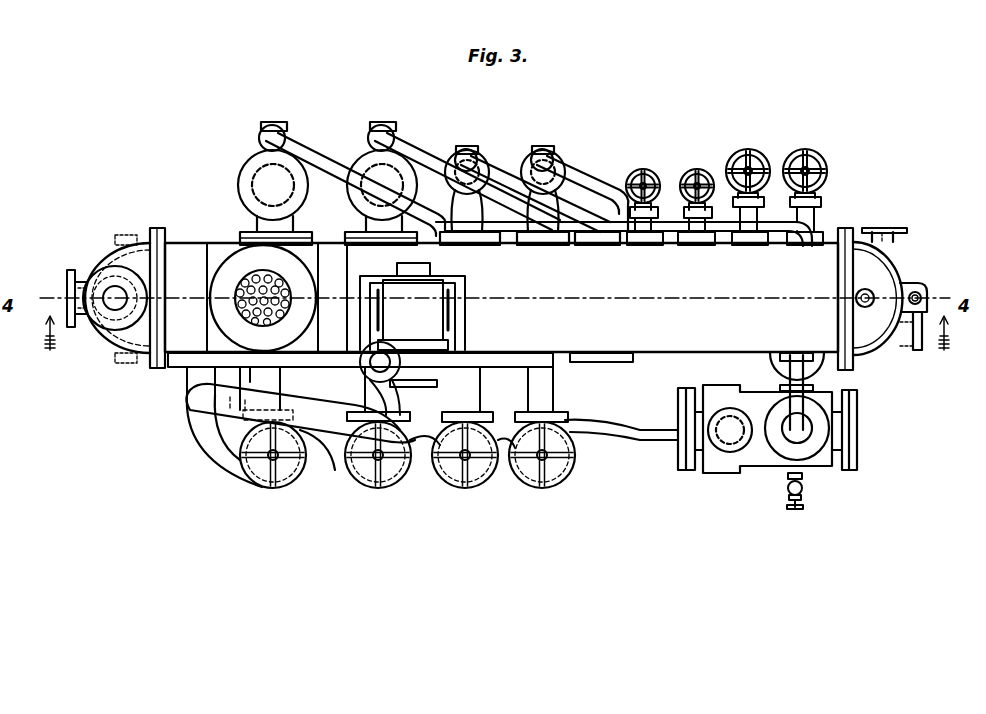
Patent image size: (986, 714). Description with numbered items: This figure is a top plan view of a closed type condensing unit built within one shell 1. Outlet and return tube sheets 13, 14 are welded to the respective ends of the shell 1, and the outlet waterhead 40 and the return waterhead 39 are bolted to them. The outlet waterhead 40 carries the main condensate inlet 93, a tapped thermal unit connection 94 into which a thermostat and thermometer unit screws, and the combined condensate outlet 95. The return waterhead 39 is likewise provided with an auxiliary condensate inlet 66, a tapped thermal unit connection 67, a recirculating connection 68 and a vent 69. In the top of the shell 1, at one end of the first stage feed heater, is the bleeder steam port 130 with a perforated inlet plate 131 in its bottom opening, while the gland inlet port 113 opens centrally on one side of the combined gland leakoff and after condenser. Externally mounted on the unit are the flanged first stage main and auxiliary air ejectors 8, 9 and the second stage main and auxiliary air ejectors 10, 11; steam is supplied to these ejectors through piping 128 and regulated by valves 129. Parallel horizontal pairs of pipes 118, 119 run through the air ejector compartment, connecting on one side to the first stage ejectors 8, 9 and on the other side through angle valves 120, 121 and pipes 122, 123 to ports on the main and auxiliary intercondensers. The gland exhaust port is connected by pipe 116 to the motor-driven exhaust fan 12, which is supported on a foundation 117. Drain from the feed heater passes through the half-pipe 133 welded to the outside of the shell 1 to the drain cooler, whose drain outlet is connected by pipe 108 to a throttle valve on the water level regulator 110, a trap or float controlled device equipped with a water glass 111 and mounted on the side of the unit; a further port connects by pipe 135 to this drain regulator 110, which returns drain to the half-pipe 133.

The shell 1 is at (690, 340).
The outlet tube sheet 13 is at (158, 230).
The return tube sheet 14 is at (846, 228).
The outlet waterhead 40 is at (118, 262).
The combined condensate outlet 95 is at (115, 305).
The main condensate inlet 93 is at (80, 320).
The tapped thermal unit connection 94 is at (125, 236).
The bleeder steam port 130 is at (245, 272).
The perforated inlet plate 131 is at (290, 283).
The first stage main air ejector 8 is at (372, 172).
The first stage auxiliary air ejector 9 is at (556, 210).
The steam supply piping 128 is at (594, 218).
The steam regulating valves 129 is at (649, 170).
The second stage auxiliary air ejector 11 is at (690, 205).
The second stage main air ejector 10 is at (755, 160).
The return waterhead 39 is at (893, 270).
The recirculating connection 68 is at (888, 228).
The vent 69 is at (868, 292).
The tapped thermal unit connection 67 is at (924, 295).
The auxiliary condensate inlet 66 is at (921, 335).
The foundation 117 is at (447, 300).
The motor-driven exhaust fan 12 is at (465, 362).
The horizontal pipe pair 119 is at (528, 382).
The gland inlet port 113 is at (606, 362).
The horizontal pipe pair 118 is at (360, 382).
The gland exhaust pipe 116 is at (205, 418).
The intercondenser connecting pipe 122 is at (238, 470).
The angle valve 120 is at (355, 478).
The intercondenser connecting pipe 123 is at (430, 465).
The angle valve 121 is at (522, 478).
The drain pipe 108 is at (640, 436).
The water level regulator 110 is at (830, 435).
The drain regulator pipe 135 is at (800, 378).
The half-pipe 133 is at (818, 346).
The water glass 111 is at (805, 488).